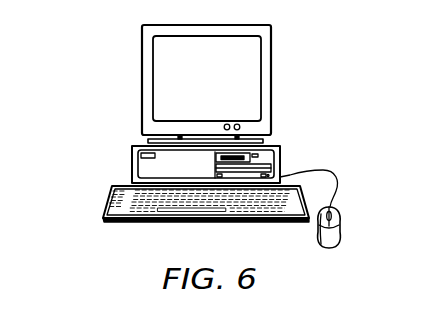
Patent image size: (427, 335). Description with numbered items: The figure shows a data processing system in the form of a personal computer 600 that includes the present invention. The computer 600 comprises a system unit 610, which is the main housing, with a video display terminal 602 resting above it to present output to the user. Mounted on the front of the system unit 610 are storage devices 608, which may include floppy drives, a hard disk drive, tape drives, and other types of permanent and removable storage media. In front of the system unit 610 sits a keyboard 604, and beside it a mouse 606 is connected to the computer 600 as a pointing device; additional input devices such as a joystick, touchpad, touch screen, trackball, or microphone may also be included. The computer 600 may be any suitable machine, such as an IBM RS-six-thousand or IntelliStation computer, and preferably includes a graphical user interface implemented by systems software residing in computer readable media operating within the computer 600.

The computer 600 is at (82, 69).
The video display terminal 602 is at (271, 80).
The keyboard 604 is at (128, 222).
The mouse 606 is at (329, 248).
The storage devices 608 is at (253, 157).
The system unit 610 is at (132, 163).